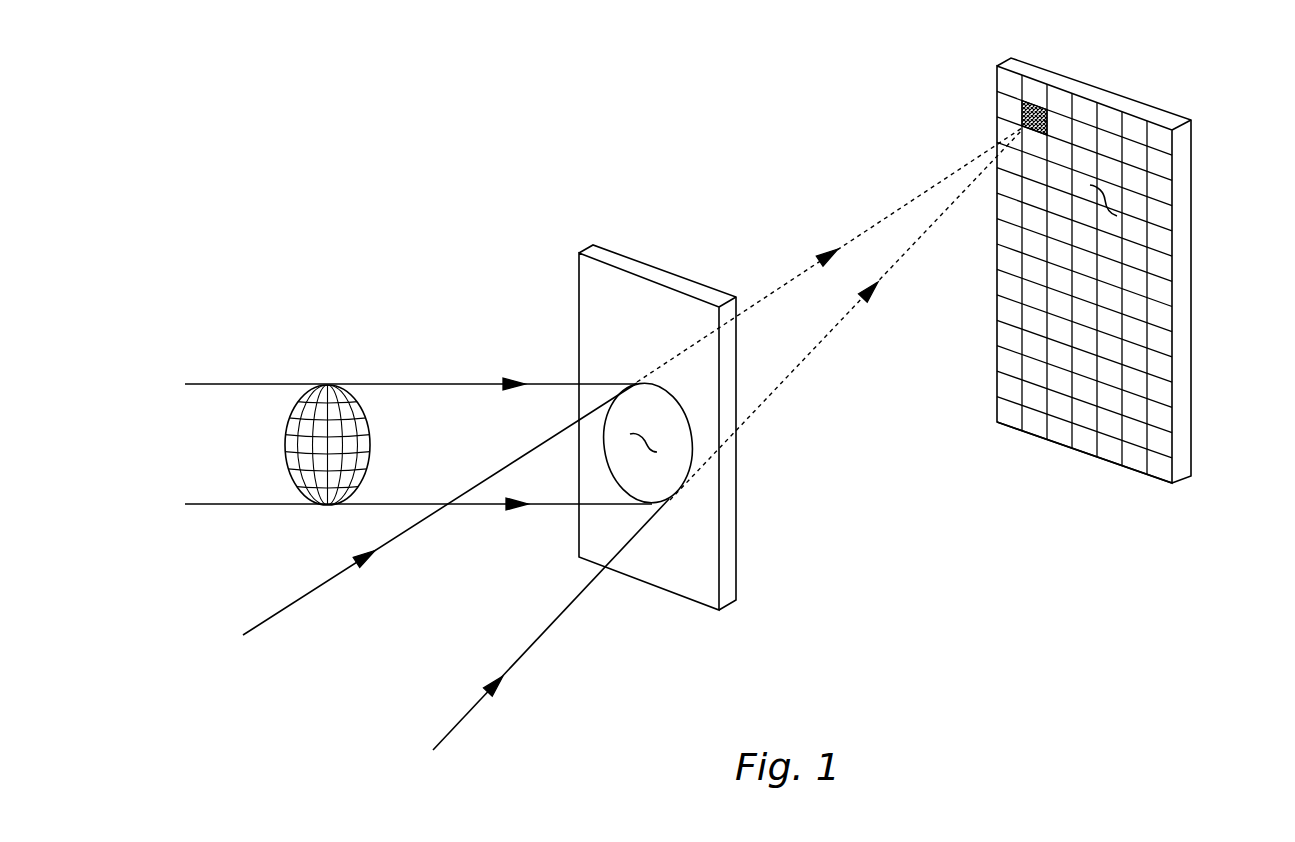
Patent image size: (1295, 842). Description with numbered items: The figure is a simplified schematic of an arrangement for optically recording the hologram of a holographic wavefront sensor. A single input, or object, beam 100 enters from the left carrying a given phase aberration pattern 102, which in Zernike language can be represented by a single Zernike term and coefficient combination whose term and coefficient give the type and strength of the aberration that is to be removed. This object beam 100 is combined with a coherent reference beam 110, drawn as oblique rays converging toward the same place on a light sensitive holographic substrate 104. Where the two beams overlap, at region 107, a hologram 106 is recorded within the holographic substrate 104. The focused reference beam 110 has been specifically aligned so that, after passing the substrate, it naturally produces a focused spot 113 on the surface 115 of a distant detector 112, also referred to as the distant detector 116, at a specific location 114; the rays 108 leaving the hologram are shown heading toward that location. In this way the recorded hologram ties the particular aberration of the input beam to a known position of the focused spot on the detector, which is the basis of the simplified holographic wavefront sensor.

The input/object beam 100 is at (218, 384).
The phase aberration pattern 102 is at (357, 395).
The holographic substrate 104 is at (610, 272).
The hologram 106 is at (693, 453).
The overlap region 107 is at (653, 432).
The transmitted rays 108 is at (830, 333).
The coherent reference beam 110 is at (470, 707).
The detector 112 is at (1157, 108).
The focused spot 113 is at (1045, 121).
The specific location 114 is at (1030, 102).
The detector surface 115 is at (1103, 203).
The distant detector 116 is at (1155, 481).